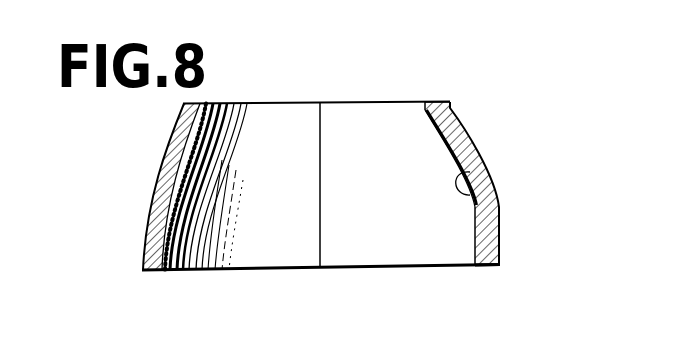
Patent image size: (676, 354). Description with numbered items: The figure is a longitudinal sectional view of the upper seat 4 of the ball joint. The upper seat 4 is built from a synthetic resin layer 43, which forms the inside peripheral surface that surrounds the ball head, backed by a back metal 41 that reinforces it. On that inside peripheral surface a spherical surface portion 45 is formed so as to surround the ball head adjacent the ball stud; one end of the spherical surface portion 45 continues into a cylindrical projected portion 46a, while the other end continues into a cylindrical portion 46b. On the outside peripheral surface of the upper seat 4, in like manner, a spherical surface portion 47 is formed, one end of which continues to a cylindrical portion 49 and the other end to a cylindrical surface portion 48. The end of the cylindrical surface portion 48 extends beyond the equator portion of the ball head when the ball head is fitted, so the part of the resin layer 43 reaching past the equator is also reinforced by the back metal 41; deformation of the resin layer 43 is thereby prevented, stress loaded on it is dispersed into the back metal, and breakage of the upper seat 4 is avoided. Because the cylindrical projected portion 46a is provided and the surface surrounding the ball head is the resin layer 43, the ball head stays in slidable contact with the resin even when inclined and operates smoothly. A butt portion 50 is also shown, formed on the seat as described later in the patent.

The upper seat 4 is at (146, 155).
The back metal 41 is at (497, 222).
The resin layer 43 is at (475, 212).
The spherical surface portion 45 is at (493, 197).
The cylindrical projected portion 46a is at (423, 102).
The cylindrical portion 46b is at (472, 247).
The spherical surface portion 47 is at (478, 146).
The cylindrical surface portion 48 is at (487, 266).
The cylindrical portion 49 is at (450, 102).
The butt portion 50 is at (322, 190).